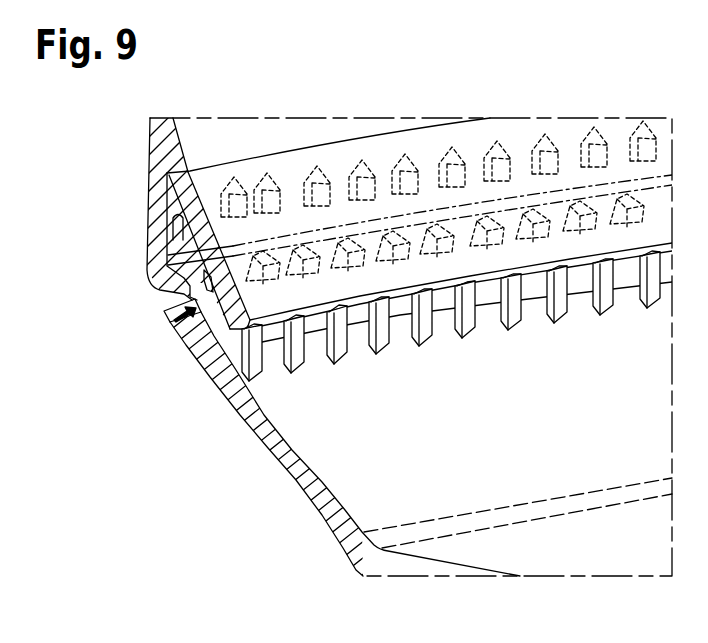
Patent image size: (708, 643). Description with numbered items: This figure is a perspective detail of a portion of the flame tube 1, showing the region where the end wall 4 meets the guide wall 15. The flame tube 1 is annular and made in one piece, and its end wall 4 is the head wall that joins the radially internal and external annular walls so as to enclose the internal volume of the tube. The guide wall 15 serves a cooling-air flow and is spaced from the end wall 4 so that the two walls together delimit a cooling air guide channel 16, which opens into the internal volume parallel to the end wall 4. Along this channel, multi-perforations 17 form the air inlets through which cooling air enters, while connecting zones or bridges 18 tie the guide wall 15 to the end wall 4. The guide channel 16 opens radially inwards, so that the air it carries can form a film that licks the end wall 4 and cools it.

The flame tube 1 is at (172, 459).
The end wall 4 is at (286, 469).
The guide wall 15 is at (240, 304).
The cooling air guide channel 16 is at (164, 312).
The multi-perforations 17 is at (173, 224).
The connecting zones or bridges 18 is at (231, 404).